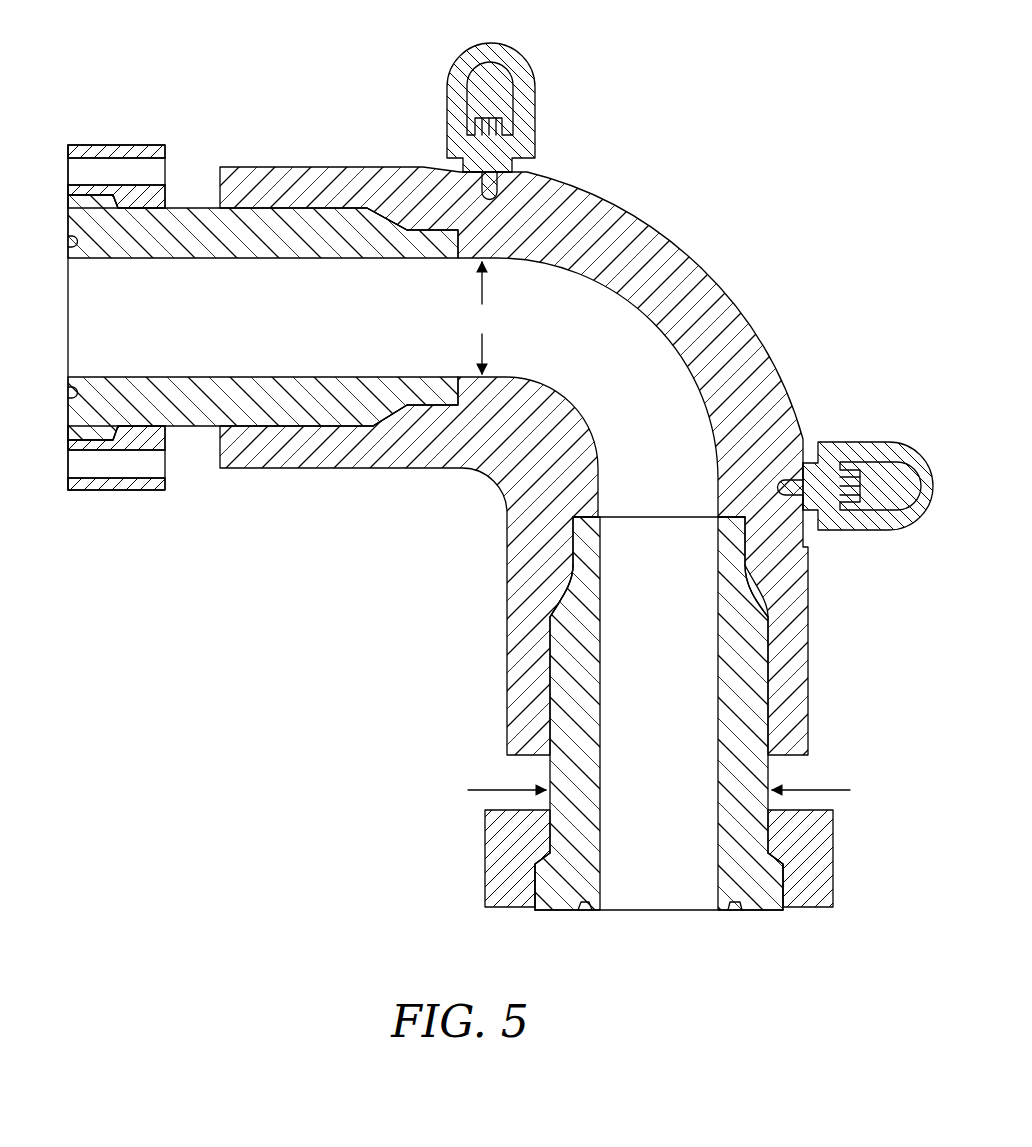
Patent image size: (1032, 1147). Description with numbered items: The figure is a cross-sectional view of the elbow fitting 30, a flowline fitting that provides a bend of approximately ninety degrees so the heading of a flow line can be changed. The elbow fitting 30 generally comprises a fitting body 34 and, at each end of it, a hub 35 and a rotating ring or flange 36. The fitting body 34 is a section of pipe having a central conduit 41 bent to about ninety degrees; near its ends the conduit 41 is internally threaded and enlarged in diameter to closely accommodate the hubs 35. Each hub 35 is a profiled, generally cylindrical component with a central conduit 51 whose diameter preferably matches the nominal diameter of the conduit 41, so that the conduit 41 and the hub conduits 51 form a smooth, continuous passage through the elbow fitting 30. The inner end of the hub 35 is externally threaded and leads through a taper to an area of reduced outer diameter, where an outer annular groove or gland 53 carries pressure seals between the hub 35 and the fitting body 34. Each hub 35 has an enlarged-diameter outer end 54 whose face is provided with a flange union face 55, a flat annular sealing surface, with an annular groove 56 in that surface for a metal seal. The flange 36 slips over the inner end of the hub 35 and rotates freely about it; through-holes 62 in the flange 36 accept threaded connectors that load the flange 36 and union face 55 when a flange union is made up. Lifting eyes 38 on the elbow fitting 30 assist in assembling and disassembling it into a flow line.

The elbow fitting 30 is at (155, 53).
The fitting body 34 is at (692, 246).
The hub 35 is at (190, 204).
The rotating ring or flange 36 is at (89, 141).
The lifting eyes 38 is at (522, 97).
The central conduit 41 is at (607, 394).
The hub conduit 51 is at (240, 326).
The outer annular groove or gland 53 is at (455, 393).
The enlarged-diameter outer end 54 is at (82, 413).
The flange union face 55 is at (66, 226).
The annular groove 56 is at (67, 392).
The through-holes 62 is at (75, 167).